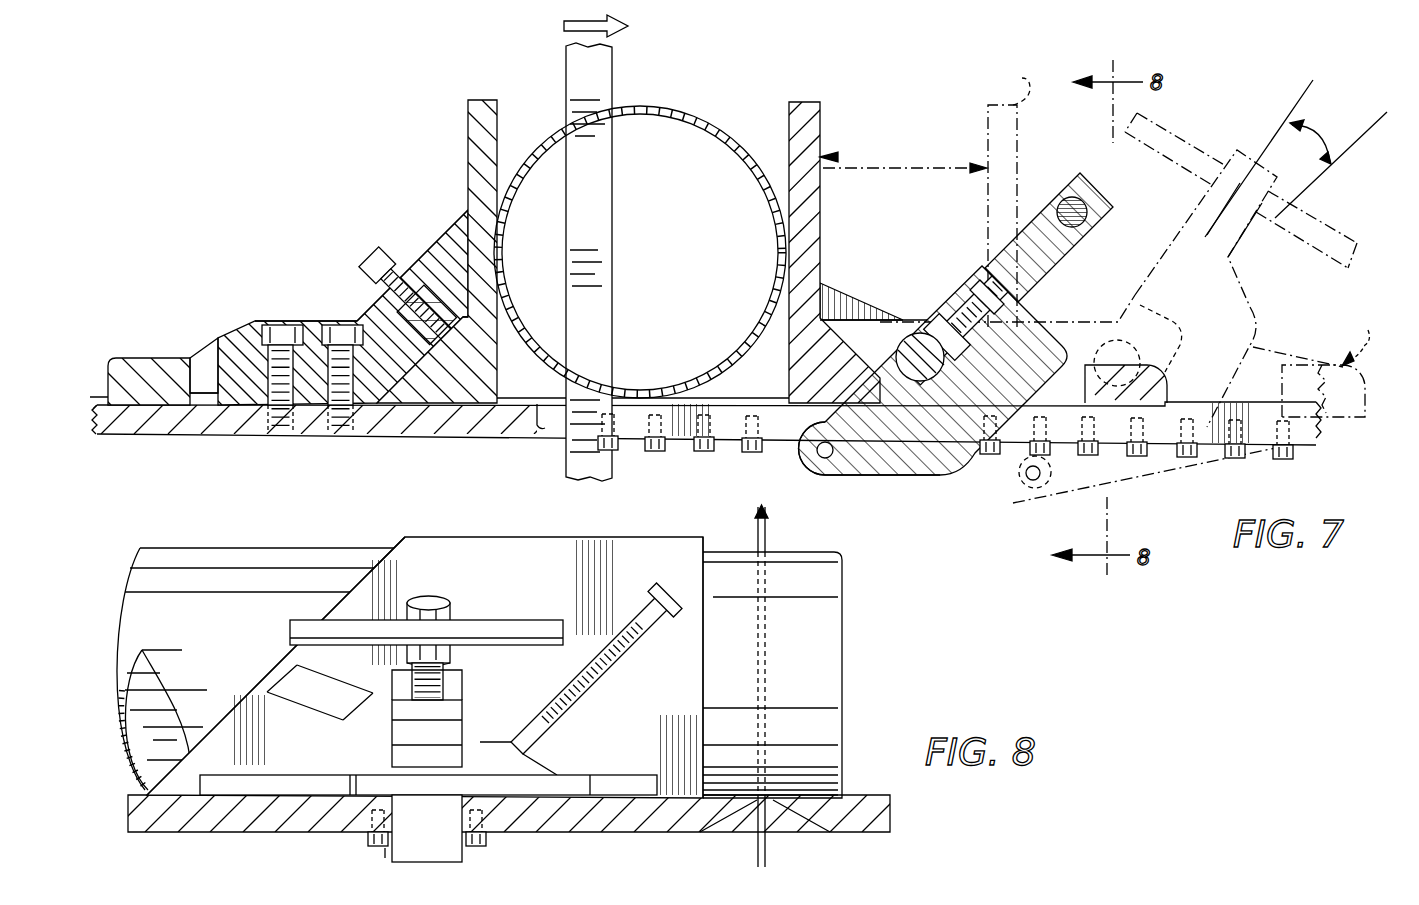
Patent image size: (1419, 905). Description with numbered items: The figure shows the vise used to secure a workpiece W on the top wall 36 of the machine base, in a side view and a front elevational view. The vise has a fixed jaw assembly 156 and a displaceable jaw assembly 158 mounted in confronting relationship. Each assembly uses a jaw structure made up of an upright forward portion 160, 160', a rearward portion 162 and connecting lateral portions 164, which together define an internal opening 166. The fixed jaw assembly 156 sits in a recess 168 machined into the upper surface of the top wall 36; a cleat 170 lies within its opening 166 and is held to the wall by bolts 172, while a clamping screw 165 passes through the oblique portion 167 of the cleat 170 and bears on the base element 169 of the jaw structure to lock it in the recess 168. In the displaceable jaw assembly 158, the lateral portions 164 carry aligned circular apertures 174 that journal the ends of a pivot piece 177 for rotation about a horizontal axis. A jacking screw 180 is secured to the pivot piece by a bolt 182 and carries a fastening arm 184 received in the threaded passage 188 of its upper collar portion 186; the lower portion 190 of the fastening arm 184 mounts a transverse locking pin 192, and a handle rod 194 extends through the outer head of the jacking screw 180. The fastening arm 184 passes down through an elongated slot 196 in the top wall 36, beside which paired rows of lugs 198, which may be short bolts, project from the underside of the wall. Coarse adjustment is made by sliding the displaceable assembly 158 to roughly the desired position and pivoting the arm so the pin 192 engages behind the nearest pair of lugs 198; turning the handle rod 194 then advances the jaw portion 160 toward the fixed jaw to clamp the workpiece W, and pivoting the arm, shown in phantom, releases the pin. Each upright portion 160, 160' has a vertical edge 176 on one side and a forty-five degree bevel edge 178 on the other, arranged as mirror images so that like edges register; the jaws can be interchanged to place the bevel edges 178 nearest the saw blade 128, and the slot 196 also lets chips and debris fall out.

In FIG. 7, the top wall 36 is at (474, 423).
In FIG. 8, the top wall 36 is at (607, 820).
In FIG. 7, the saw blade 128 is at (566, 84).
In FIG. 8, the saw blade 128 is at (768, 535).
In FIG. 7, the workpiece W is at (715, 118).
In FIG. 8, the workpiece W is at (832, 663).
In FIG. 7, the fixed jaw assembly 156 is at (214, 337).
In FIG. 7, the displaceable jaw assembly 158 is at (838, 157).
In FIG. 8, the displaceable jaw assembly 158 is at (245, 685).
In FIG. 7, the upright forward portion 160 is at (933, 241).
In FIG. 8, the upright forward portion 160 is at (425, 651).
In FIG. 7, the upright forward portion 160' is at (442, 251).
In FIG. 7, the rearward portion 162 is at (148, 396).
In FIG. 7, the lateral portions 164 is at (204, 364).
In FIG. 7, the clamping screw 165 is at (404, 269).
In FIG. 7, the internal opening 166 is at (381, 404).
In FIG. 7, the oblique portion 167 is at (438, 269).
In FIG. 7, the recess 168 is at (204, 404).
In FIG. 7, the base element 169 is at (473, 382).
In FIG. 7, the cleat 170 is at (309, 400).
In FIG. 7, the bolts 172 is at (340, 327).
In FIG. 7, the circular apertures 174 is at (920, 335).
In FIG. 8, the vertical edge 176 is at (710, 680).
In FIG. 7, the pivot piece 177 is at (900, 358).
In FIG. 8, the bevel edge 178 is at (367, 570).
In FIG. 7, the jacking screw 180 is at (1017, 253).
In FIG. 8, the jacking screw 180 is at (453, 663).
In FIG. 7, the bolt 182 is at (970, 470).
In FIG. 7, the fastening arm 184 is at (1237, 303).
In FIG. 7, the upper collar portion 186 is at (993, 275).
In FIG. 8, the upper collar portion 186 is at (400, 700).
In FIG. 7, the threaded passage 188 is at (975, 290).
In FIG. 7, the lower portion 190 is at (920, 470).
In FIG. 8, the lower portion 190 is at (440, 848).
In FIG. 7, the transverse locking pin 192 is at (818, 452).
In FIG. 8, the transverse locking pin 192 is at (385, 855).
In FIG. 7, the handle rod 194 is at (1068, 198).
In FIG. 8, the handle rod 194 is at (543, 630).
In FIG. 7, the elongated slot 196 is at (537, 430).
In FIG. 7, the lugs 198 is at (733, 450).
In FIG. 8, the lugs 198 is at (367, 840).